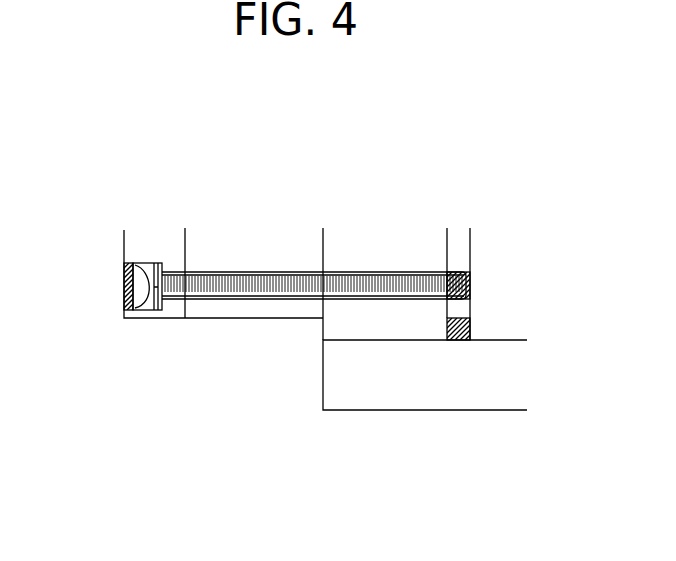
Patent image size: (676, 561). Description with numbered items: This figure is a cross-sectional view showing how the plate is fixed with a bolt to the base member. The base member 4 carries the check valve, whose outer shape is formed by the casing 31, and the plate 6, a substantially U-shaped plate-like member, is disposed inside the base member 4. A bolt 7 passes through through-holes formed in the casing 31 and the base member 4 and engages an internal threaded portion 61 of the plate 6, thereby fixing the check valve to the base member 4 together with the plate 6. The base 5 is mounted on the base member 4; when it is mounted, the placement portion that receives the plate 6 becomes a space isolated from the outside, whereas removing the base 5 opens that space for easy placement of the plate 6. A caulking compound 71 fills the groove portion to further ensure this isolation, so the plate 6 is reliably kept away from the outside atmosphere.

The base member 4 is at (383, 220).
The base 5 is at (350, 433).
The plate 6 is at (460, 238).
The bolt 7 is at (260, 275).
The casing 31 is at (252, 313).
The internal threaded portion 61 is at (466, 285).
The caulking compound 71 is at (123, 282).